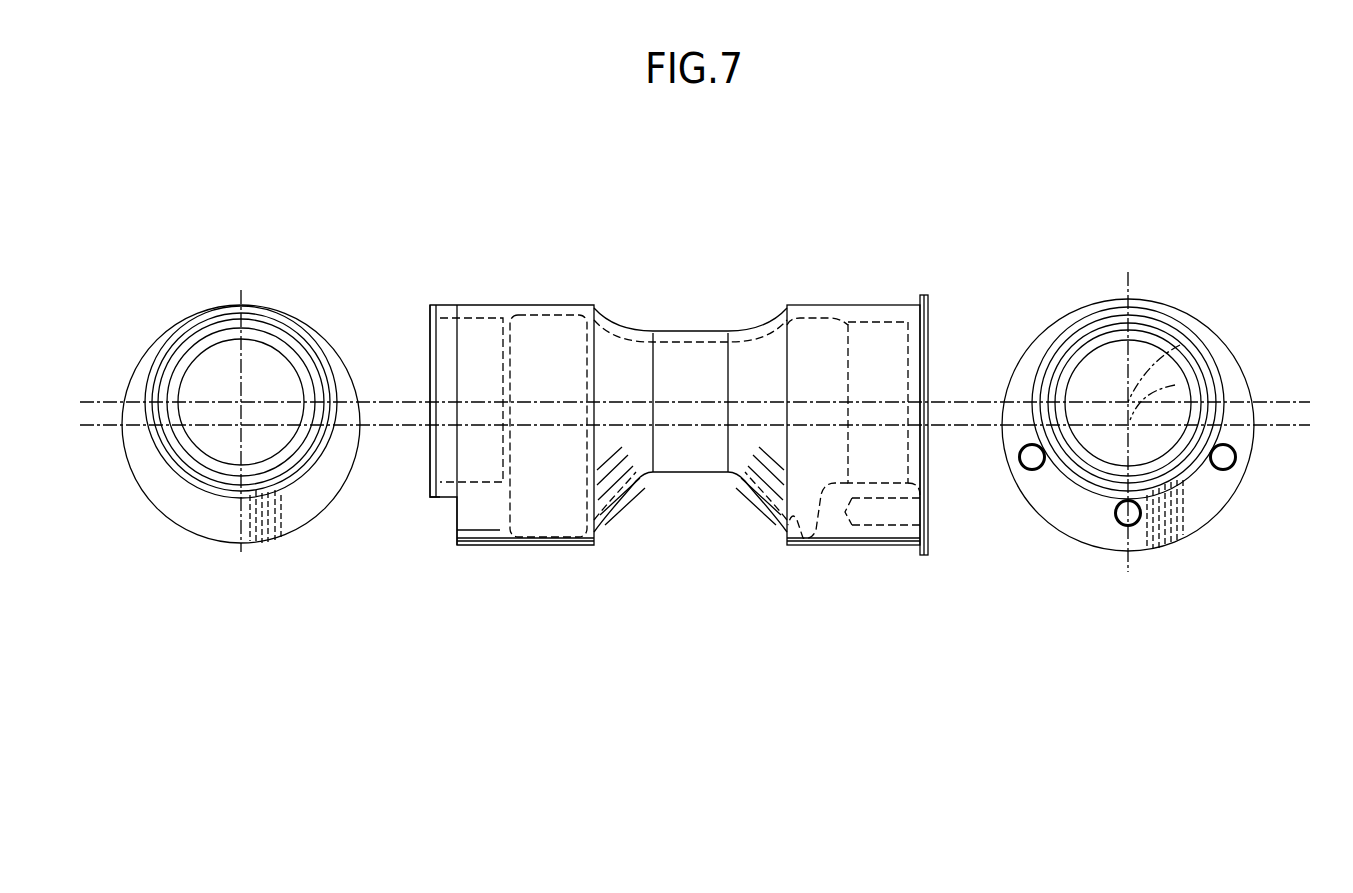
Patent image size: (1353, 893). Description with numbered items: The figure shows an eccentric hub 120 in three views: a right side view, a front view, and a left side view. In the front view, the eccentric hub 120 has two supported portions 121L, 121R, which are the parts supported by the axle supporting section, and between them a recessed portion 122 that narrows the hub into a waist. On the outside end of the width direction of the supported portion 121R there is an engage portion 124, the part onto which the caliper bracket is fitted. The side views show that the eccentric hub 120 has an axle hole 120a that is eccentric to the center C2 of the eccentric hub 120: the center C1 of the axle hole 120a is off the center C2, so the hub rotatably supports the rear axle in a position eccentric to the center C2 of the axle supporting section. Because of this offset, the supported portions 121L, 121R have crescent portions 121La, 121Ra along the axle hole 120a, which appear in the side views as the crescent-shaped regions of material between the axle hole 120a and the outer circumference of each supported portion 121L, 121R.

The eccentric hub 120 is at (888, 224).
The axle hole 120a is at (275, 372).
The supported portion 121R is at (513, 310).
The crescent portion 121Ra is at (290, 522).
The supported portion 121L is at (833, 322).
The crescent portion 121La is at (1185, 523).
The recessed portion 122 is at (690, 337).
The engage portion 124 is at (228, 308).
The center of the axle hole C1 is at (1180, 345).
The center of the eccentric hub C2 is at (1175, 385).